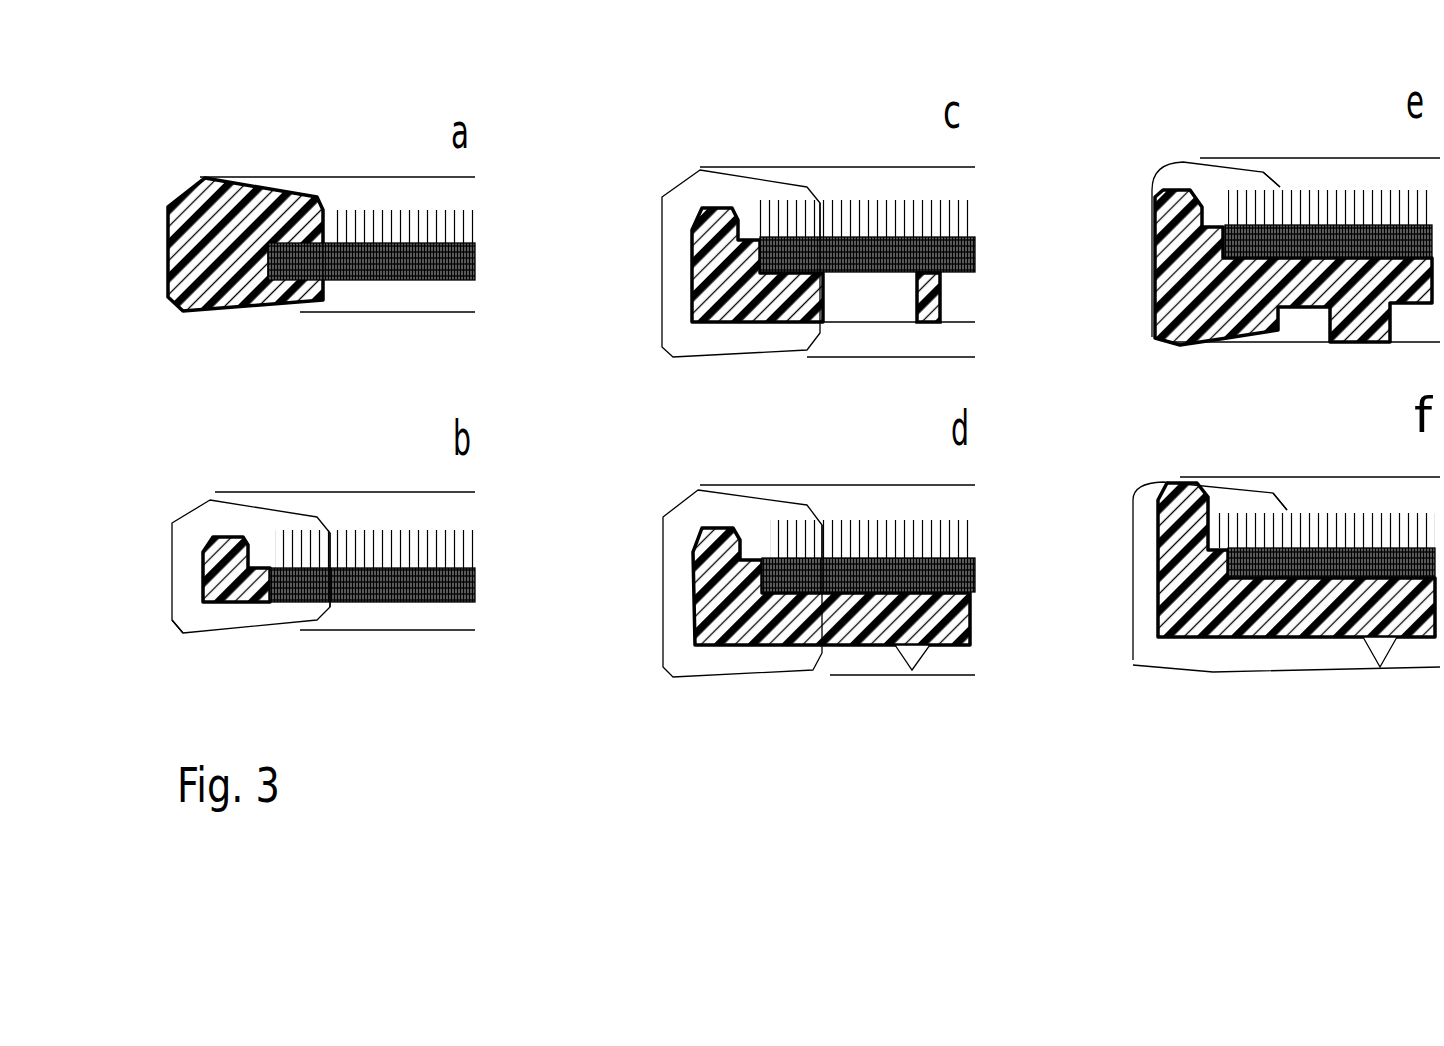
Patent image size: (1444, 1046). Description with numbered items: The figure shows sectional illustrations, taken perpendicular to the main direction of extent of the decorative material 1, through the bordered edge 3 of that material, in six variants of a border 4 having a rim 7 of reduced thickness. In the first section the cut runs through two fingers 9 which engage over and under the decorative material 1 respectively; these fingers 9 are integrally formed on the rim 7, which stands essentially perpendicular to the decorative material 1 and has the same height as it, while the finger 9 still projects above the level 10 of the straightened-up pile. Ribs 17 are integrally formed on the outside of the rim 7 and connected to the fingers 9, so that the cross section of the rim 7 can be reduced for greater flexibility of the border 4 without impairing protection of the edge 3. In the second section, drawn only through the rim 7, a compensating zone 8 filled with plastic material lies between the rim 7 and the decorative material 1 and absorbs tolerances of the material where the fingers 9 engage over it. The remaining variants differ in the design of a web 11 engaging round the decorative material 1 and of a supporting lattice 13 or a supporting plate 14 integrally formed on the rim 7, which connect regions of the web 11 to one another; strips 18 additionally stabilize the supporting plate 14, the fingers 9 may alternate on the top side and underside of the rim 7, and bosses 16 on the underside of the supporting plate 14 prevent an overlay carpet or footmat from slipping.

The decorative material 1 is at (432, 258).
The edge of the decorative material 3 is at (279, 254).
The border 4 is at (196, 176).
The rim 7 is at (228, 262).
The compensating zone 8 is at (257, 583).
The fingers 9 is at (299, 200).
The level of the decorative material 10 is at (396, 208).
The web 11 is at (738, 318).
The supporting lattice 13 is at (883, 307).
The supporting plate 14 is at (785, 623).
The bosses 16 is at (912, 670).
The ribs 17 is at (188, 300).
The strips 18 is at (1343, 323).